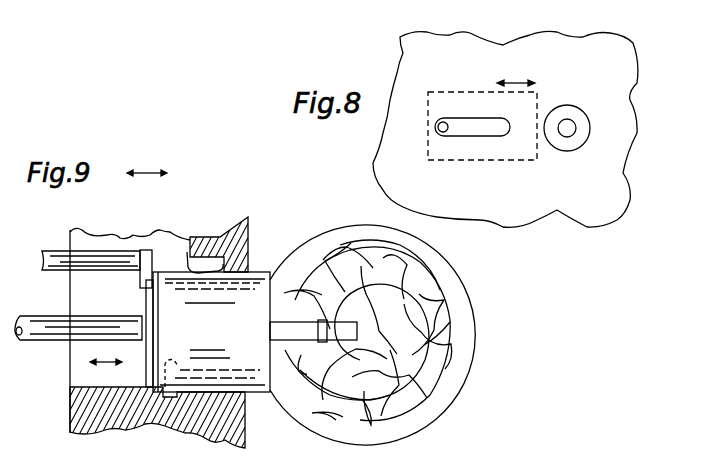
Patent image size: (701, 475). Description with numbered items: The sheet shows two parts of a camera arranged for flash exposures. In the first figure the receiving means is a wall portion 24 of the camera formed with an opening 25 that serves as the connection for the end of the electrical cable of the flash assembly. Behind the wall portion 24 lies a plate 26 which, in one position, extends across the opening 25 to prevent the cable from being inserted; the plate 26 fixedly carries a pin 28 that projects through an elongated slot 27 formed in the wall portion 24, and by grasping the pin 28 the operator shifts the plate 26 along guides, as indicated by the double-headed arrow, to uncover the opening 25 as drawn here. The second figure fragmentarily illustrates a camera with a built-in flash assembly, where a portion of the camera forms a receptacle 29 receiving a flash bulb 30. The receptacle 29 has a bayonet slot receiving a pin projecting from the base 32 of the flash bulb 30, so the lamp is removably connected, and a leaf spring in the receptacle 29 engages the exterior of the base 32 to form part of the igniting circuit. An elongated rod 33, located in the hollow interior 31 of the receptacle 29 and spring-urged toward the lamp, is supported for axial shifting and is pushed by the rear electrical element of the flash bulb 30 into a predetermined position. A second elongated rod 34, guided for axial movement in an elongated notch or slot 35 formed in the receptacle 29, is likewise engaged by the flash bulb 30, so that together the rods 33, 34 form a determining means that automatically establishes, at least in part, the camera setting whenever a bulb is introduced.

In FIG. 8, the wall portion 24 is at (447, 52).
In FIG. 8, the opening 25 is at (572, 110).
In FIG. 8, the plate 26 is at (519, 157).
In FIG. 8, the elongated slot 27 is at (476, 133).
In FIG. 8, the pin 28 is at (440, 135).
In FIG. 9, the receptacle 29 is at (219, 237).
In FIG. 9, the flash bulb 30 is at (455, 352).
In FIG. 9, the hollow interior 31 is at (85, 297).
In FIG. 9, the base 32 is at (245, 295).
In FIG. 9, the elongated rod 33 is at (70, 332).
In FIG. 9, the elongated rod 34 is at (123, 260).
In FIG. 9, the elongated notch or slot 35 is at (165, 257).